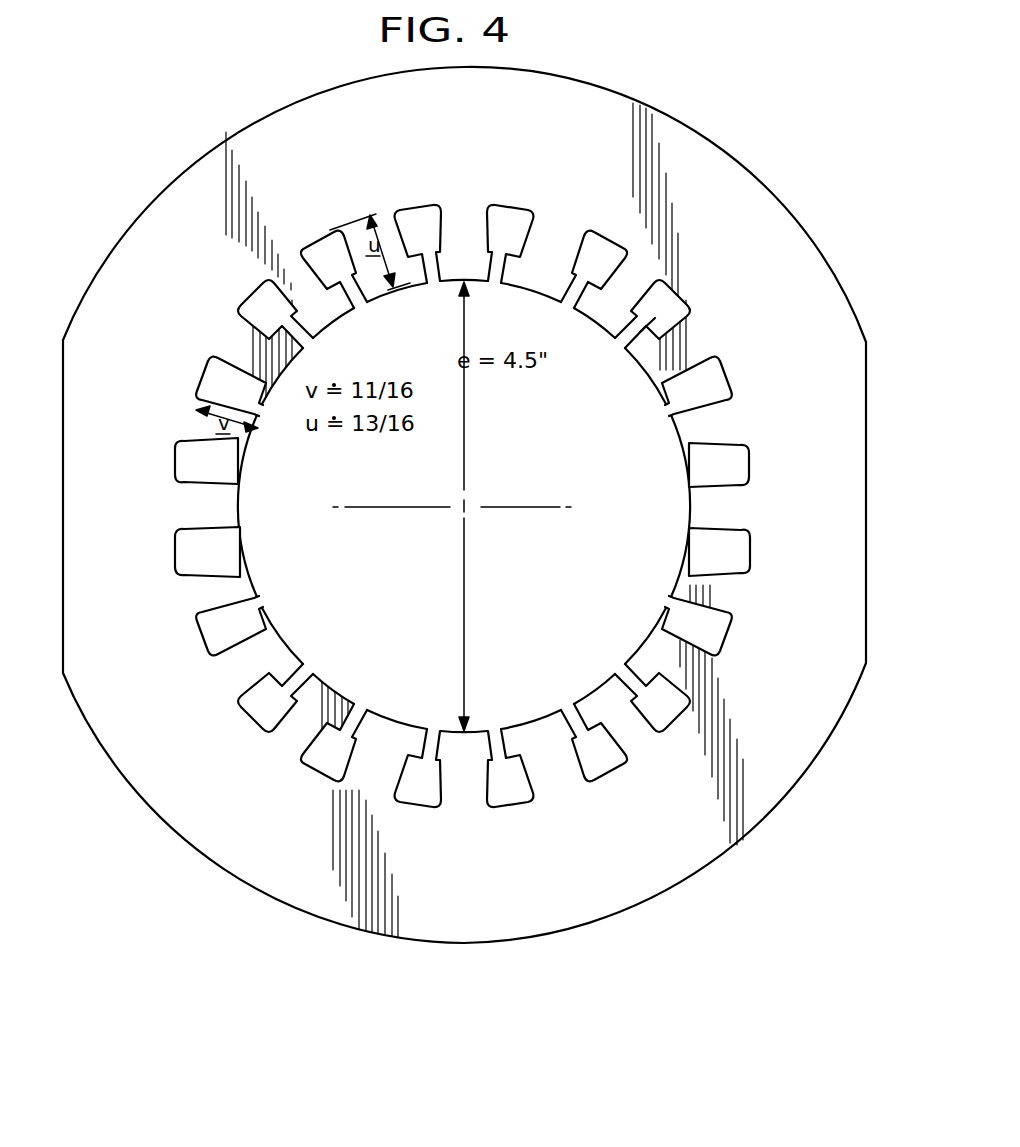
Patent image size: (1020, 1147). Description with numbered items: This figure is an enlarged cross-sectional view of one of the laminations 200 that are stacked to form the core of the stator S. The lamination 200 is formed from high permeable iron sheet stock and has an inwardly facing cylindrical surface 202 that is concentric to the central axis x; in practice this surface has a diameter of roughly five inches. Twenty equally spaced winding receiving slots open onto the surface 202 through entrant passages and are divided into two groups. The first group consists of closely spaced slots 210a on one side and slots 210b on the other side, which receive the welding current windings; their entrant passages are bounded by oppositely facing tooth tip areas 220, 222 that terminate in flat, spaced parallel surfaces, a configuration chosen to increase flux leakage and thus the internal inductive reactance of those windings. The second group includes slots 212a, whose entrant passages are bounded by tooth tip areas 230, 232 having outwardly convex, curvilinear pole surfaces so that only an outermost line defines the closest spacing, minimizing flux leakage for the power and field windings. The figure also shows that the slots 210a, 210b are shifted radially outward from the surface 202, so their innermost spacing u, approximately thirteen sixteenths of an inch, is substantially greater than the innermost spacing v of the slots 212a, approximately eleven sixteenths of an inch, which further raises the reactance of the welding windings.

The laminations 200 is at (612, 101).
The cylindrical surface 202 is at (252, 574).
The slots of the first group (one side) 210a is at (443, 222).
The slots of the first group (other side) 210b is at (421, 812).
The slots of the second group 212a is at (188, 486).
The tooth tip area 220 is at (628, 344).
The tooth tip area 222 is at (637, 354).
The tooth tip area 230 is at (690, 512).
The tooth tip area 232 is at (690, 550).
The stator S is at (632, 908).
The central axis x is at (466, 506).